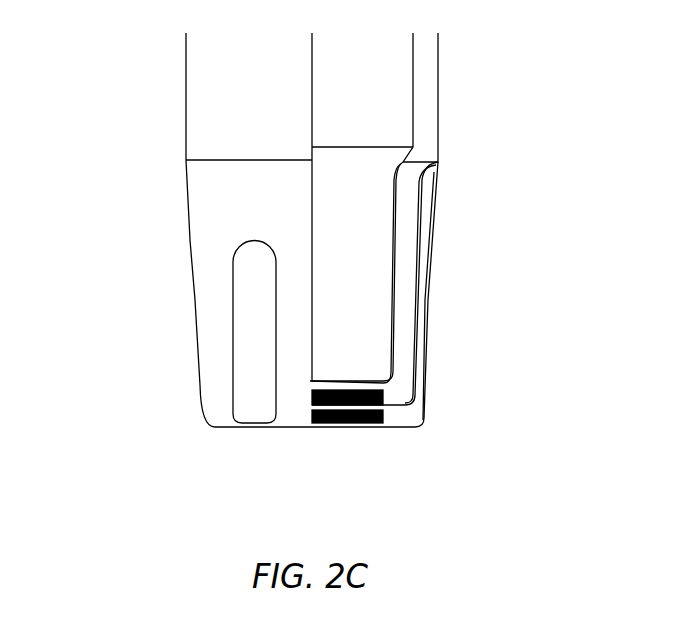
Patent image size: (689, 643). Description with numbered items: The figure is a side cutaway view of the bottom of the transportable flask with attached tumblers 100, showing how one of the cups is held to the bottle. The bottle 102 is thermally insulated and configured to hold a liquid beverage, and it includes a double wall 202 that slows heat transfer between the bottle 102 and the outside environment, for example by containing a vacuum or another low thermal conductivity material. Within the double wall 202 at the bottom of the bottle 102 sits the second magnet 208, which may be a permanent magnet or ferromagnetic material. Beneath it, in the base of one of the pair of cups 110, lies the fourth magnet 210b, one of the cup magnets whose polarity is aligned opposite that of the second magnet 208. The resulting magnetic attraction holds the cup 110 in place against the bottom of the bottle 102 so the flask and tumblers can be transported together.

The transportable flask with attached tumblers 100 is at (143, 75).
The pair of cups 110 is at (210, 343).
The double wall 202 is at (397, 268).
The bottle 102 is at (413, 333).
The second magnet 208 is at (383, 397).
The fourth magnet 210b is at (383, 425).